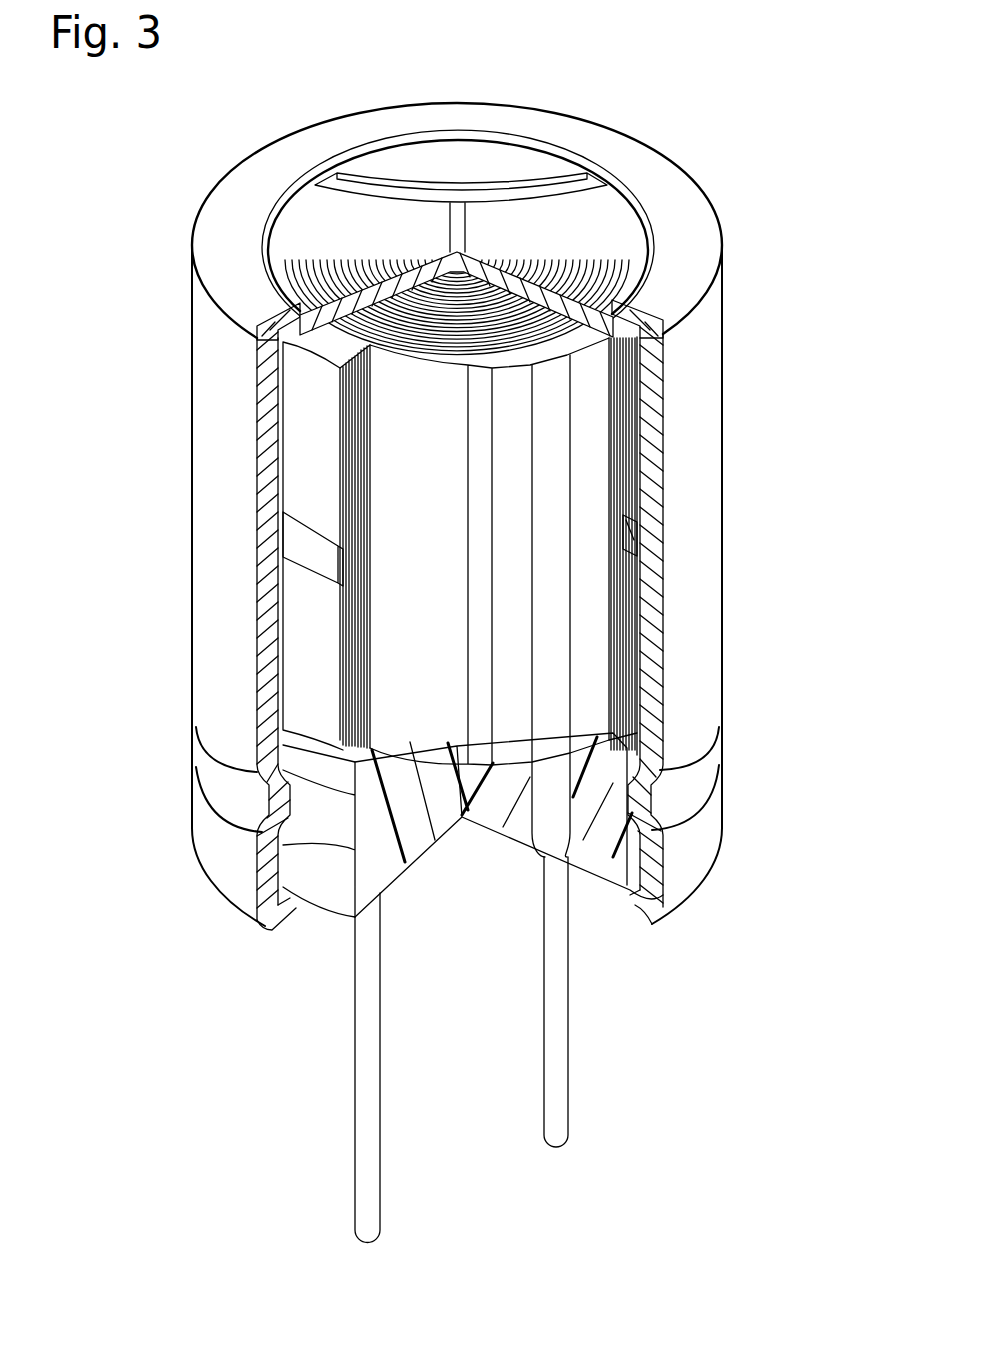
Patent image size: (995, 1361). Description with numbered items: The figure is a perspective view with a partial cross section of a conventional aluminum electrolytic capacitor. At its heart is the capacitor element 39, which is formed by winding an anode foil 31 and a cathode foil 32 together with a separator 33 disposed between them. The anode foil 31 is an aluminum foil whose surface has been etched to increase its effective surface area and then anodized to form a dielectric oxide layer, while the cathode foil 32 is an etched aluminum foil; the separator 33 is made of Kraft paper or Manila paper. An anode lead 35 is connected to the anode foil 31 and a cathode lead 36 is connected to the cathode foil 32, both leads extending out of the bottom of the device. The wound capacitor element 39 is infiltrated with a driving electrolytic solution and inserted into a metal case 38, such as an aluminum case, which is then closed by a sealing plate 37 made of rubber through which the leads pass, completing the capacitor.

The anode foil 31 is at (540, 547).
The cathode foil 32 is at (487, 432).
The separator 33 is at (512, 490).
The anode lead 35 is at (370, 1148).
The cathode lead 36 is at (557, 1033).
The sealing plate 37 is at (418, 842).
The metal case 38 is at (627, 235).
The capacitor element 39 is at (305, 607).